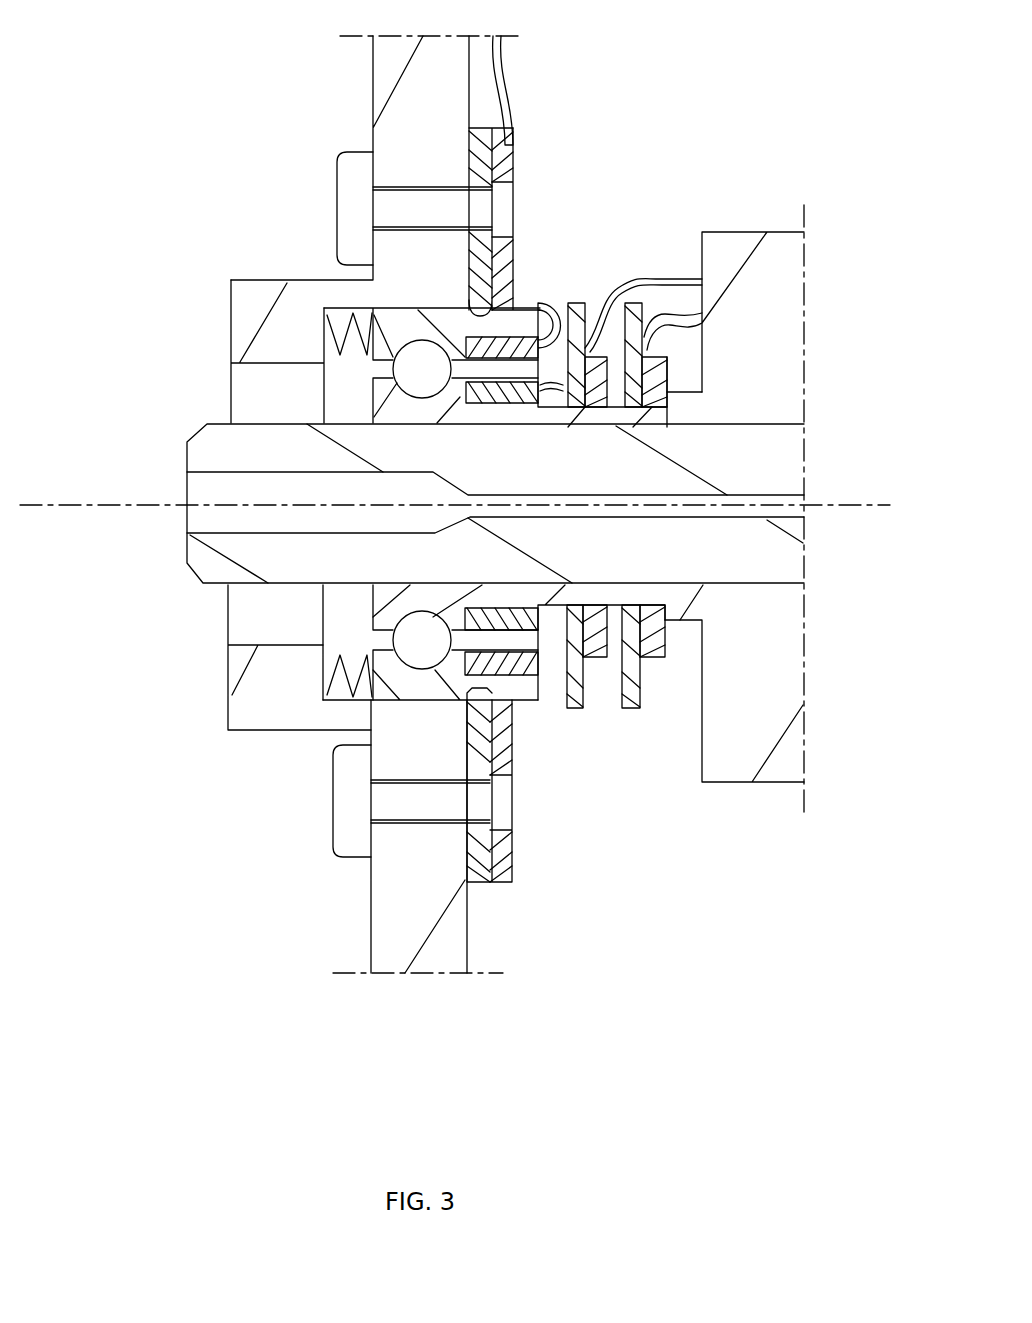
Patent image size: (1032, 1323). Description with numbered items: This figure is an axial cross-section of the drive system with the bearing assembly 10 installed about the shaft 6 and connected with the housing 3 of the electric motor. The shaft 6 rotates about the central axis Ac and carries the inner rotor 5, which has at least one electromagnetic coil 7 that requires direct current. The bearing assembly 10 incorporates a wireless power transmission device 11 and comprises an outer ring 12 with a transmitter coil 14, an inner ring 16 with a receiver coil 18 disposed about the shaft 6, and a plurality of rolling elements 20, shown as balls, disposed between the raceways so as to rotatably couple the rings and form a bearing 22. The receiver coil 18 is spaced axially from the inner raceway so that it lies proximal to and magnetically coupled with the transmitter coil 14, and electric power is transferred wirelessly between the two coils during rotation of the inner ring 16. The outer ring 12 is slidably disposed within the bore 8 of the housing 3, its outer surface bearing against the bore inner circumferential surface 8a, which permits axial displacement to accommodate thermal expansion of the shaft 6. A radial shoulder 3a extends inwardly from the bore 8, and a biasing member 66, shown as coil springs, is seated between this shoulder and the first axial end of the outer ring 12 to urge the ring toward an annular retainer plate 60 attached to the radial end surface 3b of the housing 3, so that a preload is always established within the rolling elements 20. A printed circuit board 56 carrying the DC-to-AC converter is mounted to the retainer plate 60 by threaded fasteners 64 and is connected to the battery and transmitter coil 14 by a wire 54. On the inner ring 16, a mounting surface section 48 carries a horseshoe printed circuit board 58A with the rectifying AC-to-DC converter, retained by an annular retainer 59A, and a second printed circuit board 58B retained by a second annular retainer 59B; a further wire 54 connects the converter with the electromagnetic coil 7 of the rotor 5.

The housing 3 is at (358, 76).
The radial shoulder 3a is at (330, 662).
The radial end surface 3b is at (467, 927).
The inner rotor 5 is at (752, 216).
The shaft 6 is at (173, 437).
The electromagnetic coil 7 is at (768, 285).
The bore 8 is at (345, 622).
The inner circumferential surface 8a is at (340, 693).
The bearing assembly 10 is at (336, 387).
The wireless power transmission device 11 is at (577, 451).
The outer ring 12 is at (410, 714).
The transmitter coil 14 is at (520, 319).
The inner ring 16 is at (421, 574).
The receiver coil 18 is at (511, 409).
The rolling elements 20 is at (422, 383).
The bearing 22 is at (541, 721).
The mounting surface section 48 is at (600, 610).
The wire 54 is at (507, 82).
The printed circuit board 56 is at (510, 168).
The printed circuit board 58A is at (605, 295).
The second printed circuit board 58B is at (627, 708).
The annular retainer 59A is at (595, 405).
The second annular retainer 59B is at (652, 655).
The annular retainer plate 60 is at (483, 258).
The threaded fasteners 64 is at (418, 197).
The biasing member 66 is at (338, 310).
The central axis Ac is at (870, 505).